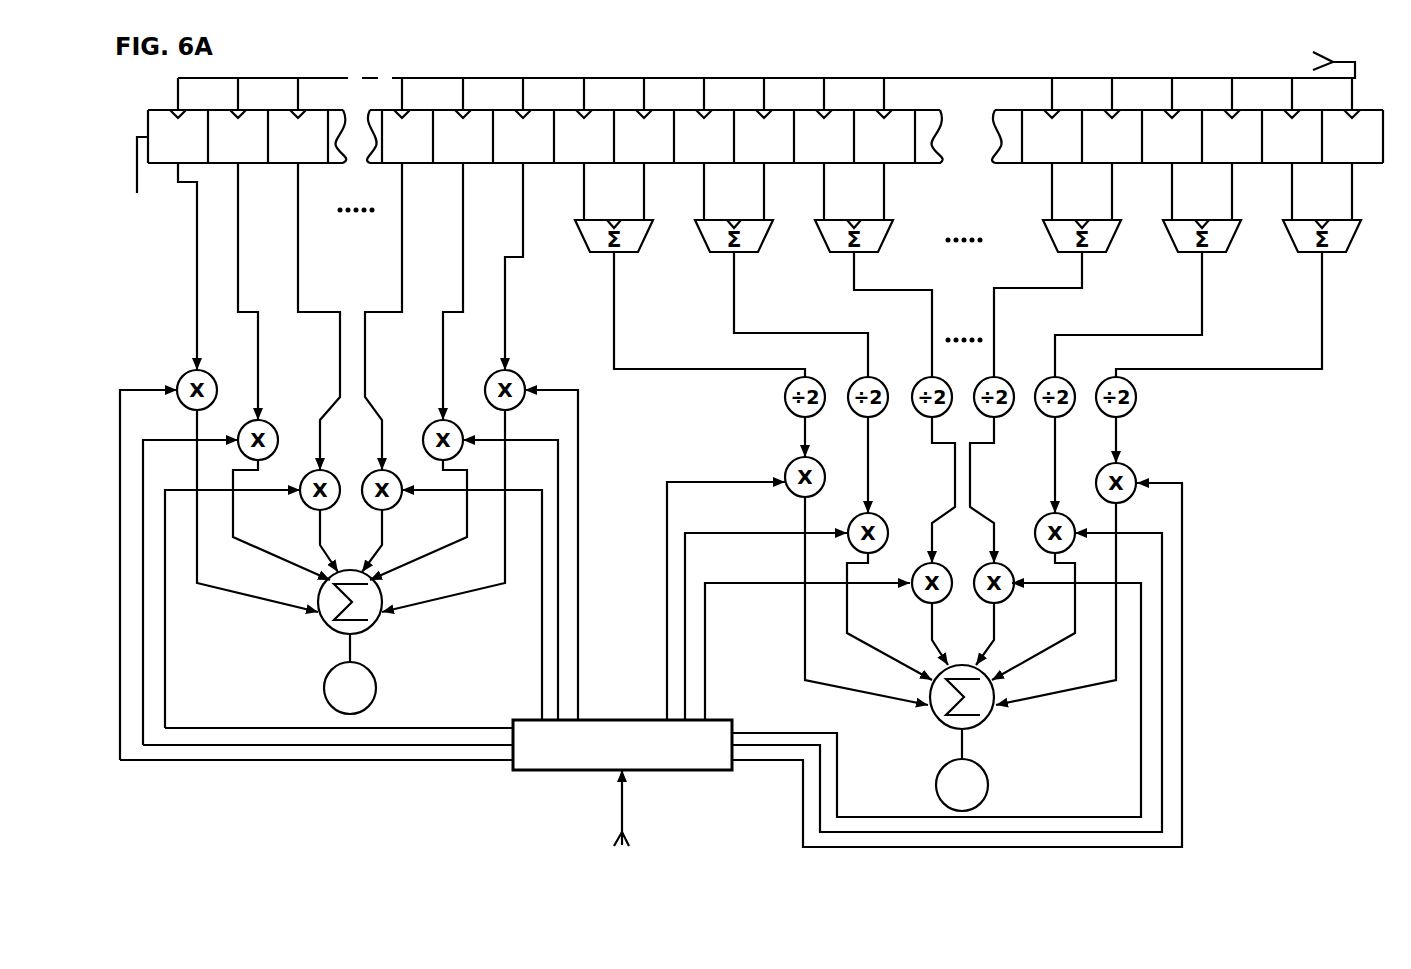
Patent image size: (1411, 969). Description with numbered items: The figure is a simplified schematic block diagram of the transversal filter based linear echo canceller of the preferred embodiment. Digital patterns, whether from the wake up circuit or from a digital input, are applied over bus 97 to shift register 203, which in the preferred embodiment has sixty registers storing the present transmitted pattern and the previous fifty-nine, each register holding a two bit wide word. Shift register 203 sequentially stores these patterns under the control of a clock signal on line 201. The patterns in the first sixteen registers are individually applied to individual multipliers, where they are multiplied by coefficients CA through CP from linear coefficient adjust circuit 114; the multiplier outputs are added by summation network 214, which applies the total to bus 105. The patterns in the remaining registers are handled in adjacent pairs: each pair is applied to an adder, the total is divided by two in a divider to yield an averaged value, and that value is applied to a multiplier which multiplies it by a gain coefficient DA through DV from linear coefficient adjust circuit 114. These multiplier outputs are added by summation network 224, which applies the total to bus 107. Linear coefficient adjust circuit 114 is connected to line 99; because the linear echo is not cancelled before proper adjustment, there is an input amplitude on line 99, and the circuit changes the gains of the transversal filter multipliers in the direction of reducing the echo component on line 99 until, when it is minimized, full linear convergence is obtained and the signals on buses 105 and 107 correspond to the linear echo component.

The clock signal line 201 is at (1357, 67).
The shift register 203 is at (147, 118).
The bus 97 is at (137, 185).
The summation network 214 is at (338, 636).
The bus 105 is at (352, 646).
The summation network 224 is at (980, 727).
The bus 107 is at (958, 752).
The linear coefficient adjust circuit 114 is at (678, 772).
The line 99 is at (620, 814).